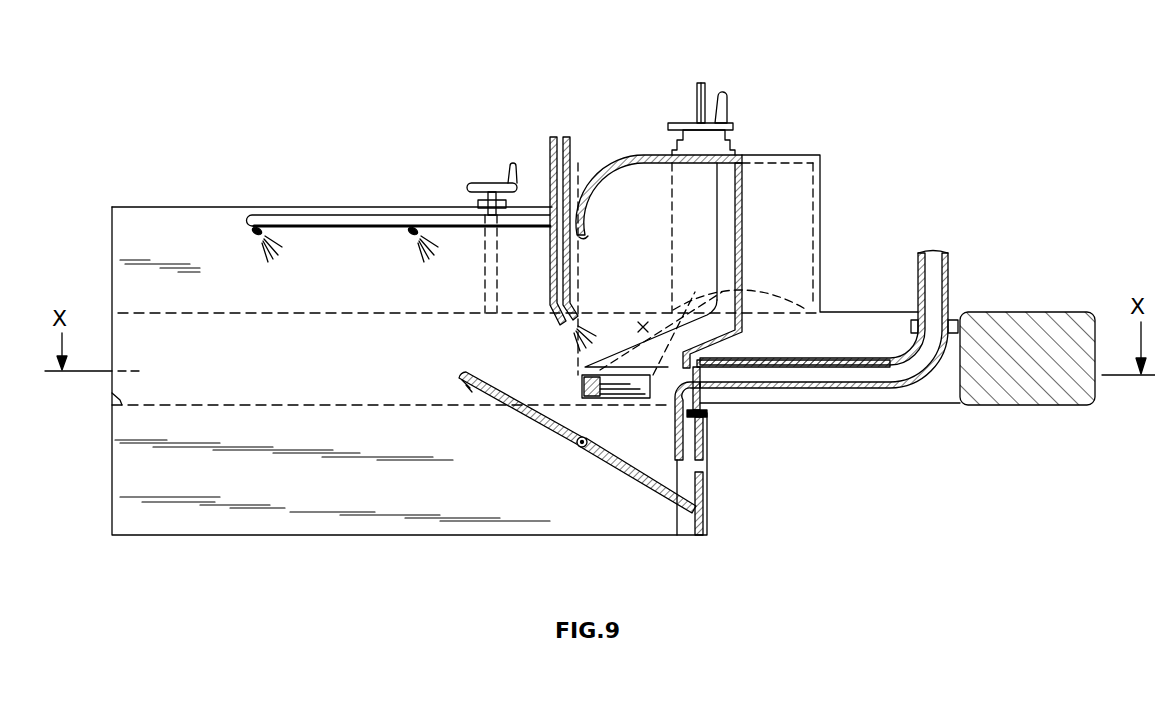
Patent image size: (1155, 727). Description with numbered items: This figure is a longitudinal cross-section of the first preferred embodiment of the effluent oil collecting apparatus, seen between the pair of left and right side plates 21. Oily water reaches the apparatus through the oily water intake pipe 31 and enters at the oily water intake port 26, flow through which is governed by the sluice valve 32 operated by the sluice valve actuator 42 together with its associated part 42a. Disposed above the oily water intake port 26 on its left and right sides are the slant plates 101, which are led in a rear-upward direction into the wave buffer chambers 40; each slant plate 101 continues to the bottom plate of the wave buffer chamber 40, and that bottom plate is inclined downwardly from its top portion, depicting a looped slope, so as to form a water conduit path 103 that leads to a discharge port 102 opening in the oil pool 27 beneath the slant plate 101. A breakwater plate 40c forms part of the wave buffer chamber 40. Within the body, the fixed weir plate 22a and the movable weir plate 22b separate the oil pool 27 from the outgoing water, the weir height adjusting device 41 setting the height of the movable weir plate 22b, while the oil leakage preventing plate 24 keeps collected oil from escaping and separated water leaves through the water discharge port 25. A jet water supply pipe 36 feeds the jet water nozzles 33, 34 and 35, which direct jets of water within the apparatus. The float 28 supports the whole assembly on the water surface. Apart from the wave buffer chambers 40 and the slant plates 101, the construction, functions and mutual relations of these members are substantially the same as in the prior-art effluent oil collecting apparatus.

The side plate 21 is at (172, 226).
The fixed weir plate 22a is at (645, 475).
The movable weir plate 22b is at (548, 420).
The oil leakage preventing plate 24 is at (695, 440).
The water discharge port 25 is at (705, 492).
The oily water intake port 26 is at (702, 374).
The oil pool 27 is at (642, 439).
The float 28 is at (1022, 383).
The oily water intake pipe 31 is at (870, 380).
The sluice valve 32 is at (707, 442).
The jet water nozzle 33 is at (252, 236).
The jet water nozzle 34 is at (408, 236).
The jet water nozzle 35 is at (556, 319).
The jet water supply pipe 36 is at (325, 215).
The wave buffer chamber 40 is at (808, 152).
The breakwater plate 40c is at (745, 262).
The weir height adjusting device 41 is at (468, 183).
The sluice valve actuator 42 is at (697, 102).
The valve lever 42a is at (729, 104).
The slant plate 101 is at (730, 345).
The discharge port 102 is at (582, 380).
The water conduit path 103 is at (637, 313).